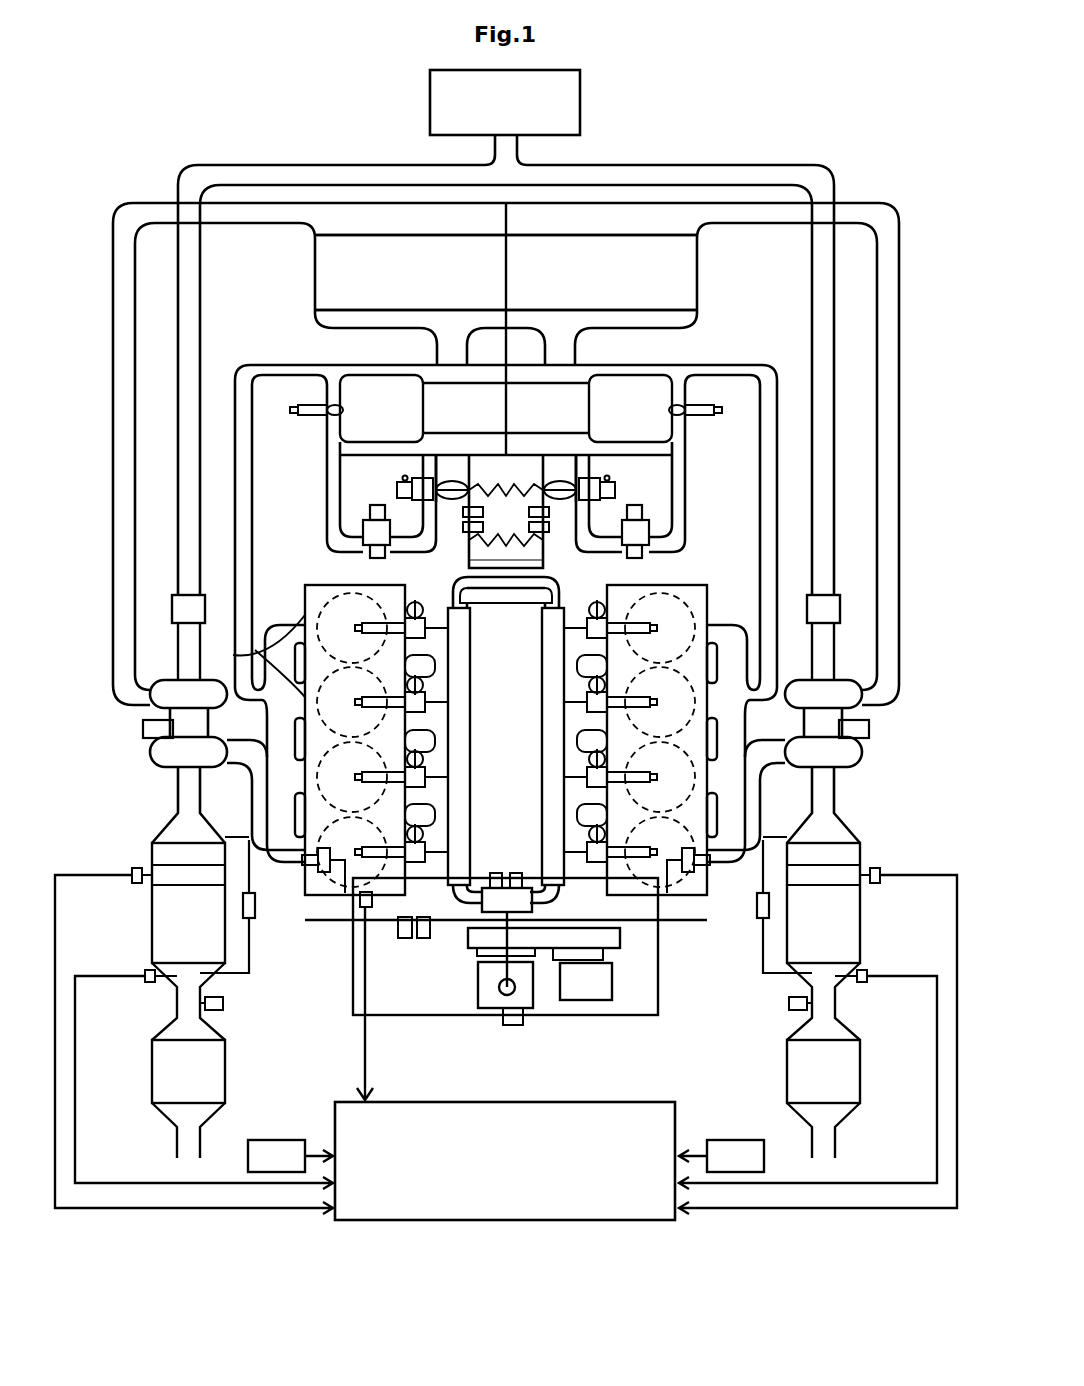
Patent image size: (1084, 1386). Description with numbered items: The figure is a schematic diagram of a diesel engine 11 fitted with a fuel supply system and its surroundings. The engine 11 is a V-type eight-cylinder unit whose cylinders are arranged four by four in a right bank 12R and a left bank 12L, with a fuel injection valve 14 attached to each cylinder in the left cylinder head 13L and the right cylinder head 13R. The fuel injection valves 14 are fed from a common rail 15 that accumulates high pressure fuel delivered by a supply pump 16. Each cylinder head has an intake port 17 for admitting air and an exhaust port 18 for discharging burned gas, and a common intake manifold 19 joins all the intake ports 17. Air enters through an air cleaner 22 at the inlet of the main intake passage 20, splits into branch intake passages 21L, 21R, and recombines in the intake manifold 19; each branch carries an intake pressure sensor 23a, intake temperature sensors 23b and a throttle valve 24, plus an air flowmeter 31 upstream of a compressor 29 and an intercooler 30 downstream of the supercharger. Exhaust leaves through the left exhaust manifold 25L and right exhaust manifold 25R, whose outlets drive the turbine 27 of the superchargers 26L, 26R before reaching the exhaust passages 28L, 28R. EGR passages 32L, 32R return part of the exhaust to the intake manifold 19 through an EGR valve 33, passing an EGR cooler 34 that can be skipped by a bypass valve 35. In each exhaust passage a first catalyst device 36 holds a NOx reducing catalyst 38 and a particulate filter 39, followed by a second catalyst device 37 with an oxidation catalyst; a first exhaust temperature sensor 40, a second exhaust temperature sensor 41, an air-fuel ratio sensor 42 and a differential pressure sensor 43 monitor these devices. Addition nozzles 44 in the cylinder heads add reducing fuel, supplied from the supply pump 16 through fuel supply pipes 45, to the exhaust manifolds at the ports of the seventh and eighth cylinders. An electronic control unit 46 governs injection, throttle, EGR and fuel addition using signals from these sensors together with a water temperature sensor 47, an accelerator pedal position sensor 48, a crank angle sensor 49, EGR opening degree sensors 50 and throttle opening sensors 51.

The engine 11 is at (700, 557).
The left bank 12L is at (305, 592).
The right bank 12R is at (707, 592).
The left cylinder head 13L is at (305, 612).
The right cylinder head 13R is at (707, 612).
The fuel injection valve 14 is at (667, 711).
The common rail 15 is at (528, 688).
The supply pump 16 is at (493, 1018).
The intake port 17 is at (597, 752).
The exhaust port 18 is at (233, 655).
The intake manifold 19 is at (532, 897).
The main intake passage 20 is at (517, 150).
The left branch intake passage 21L is at (200, 243).
The right branch intake passage 21R is at (812, 243).
The air cleaner 22 is at (580, 103).
The intake pressure sensor 23a is at (506, 552).
The intake temperature sensor 23b is at (506, 511).
The throttle valve 24 is at (445, 500).
The left exhaust manifold 25L is at (270, 780).
The right exhaust manifold 25R is at (742, 780).
The left supercharger 26L is at (138, 759).
The right supercharger 26R is at (874, 759).
The turbine 27 is at (215, 745).
The left exhaust passage 28L is at (178, 800).
The right exhaust passage 28R is at (834, 800).
The compressor 29 is at (160, 690).
The intercooler 30 is at (315, 283).
The air flowmeter 31 is at (172, 600).
The left EGR passage 32L is at (235, 480).
The right EGR passage 32R is at (777, 480).
The EGR valve 33 is at (363, 527).
The EGR cooler 34 is at (433, 363).
The bypass valve 35 is at (305, 405).
The first catalyst device 36 is at (245, 975).
The second catalyst device 37 is at (158, 1083).
The catalyst 38 is at (160, 853).
The filter 39 is at (158, 945).
The first exhaust temperature sensor 40 is at (137, 883).
The second exhaust temperature sensor 41 is at (150, 982).
The air-fuel ratio sensor 42 is at (223, 1003).
The differential pressure sensor 43 is at (255, 905).
The addition nozzle 44 is at (345, 893).
The fuel supply pipe 45 is at (637, 1038).
The electronic control unit 46 is at (655, 1100).
The water temperature sensor 47 is at (372, 900).
The accelerator pedal position sensor 48 is at (278, 1140).
The crank angle sensor 49 is at (734, 1140).
The EGR opening degree sensor 50 is at (367, 510).
The throttle opening sensor 51 is at (407, 470).